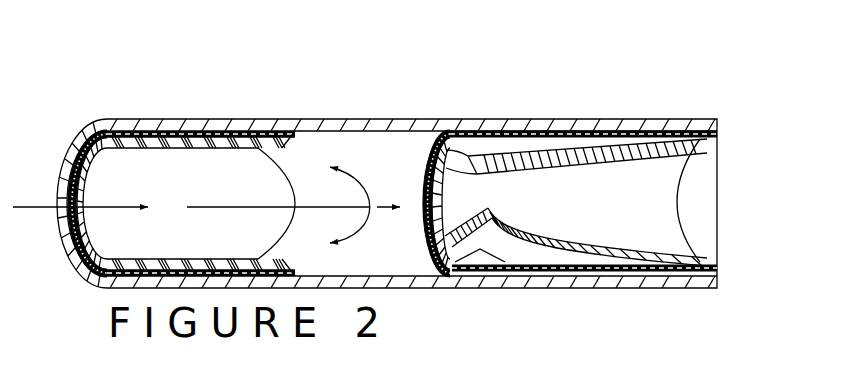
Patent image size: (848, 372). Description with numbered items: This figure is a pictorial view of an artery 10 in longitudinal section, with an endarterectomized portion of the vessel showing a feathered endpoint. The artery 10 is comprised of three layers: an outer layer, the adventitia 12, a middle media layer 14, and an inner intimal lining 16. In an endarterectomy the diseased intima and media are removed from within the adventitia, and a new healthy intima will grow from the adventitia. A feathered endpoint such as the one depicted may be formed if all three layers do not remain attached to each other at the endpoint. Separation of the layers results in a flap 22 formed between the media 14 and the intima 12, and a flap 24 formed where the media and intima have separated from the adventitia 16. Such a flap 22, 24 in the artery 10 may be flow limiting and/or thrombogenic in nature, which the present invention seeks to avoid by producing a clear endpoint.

The artery 10 is at (123, 78).
The adventitia 12 is at (140, 127).
The media layer 14 is at (186, 135).
The intimal lining 16 is at (198, 146).
The flap 22 is at (487, 158).
The flap 24 is at (462, 274).